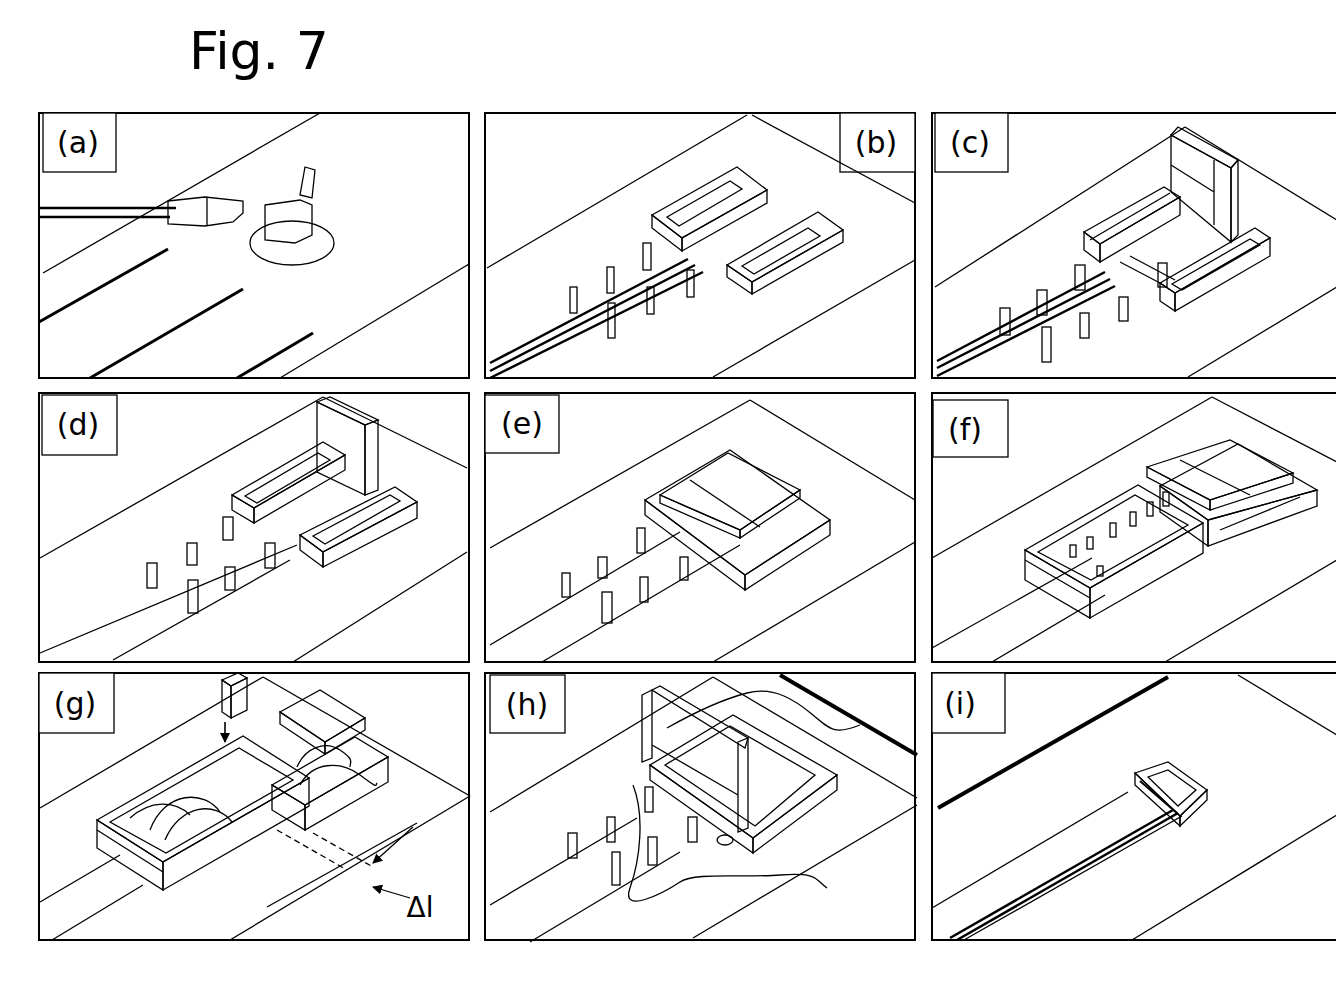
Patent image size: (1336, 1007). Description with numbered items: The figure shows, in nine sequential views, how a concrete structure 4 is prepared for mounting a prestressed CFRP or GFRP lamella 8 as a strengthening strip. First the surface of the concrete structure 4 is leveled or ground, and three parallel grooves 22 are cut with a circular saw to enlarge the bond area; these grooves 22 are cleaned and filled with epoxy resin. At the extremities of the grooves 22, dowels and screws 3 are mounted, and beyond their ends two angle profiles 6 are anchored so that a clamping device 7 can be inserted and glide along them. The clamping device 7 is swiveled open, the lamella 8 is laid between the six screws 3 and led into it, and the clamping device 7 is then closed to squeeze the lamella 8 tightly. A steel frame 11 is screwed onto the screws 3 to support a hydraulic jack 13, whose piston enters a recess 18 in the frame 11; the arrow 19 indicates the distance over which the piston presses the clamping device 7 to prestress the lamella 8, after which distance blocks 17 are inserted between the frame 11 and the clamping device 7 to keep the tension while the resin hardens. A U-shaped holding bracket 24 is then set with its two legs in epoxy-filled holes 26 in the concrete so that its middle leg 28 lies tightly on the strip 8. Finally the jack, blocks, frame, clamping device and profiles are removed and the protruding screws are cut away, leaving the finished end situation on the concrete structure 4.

The dowels and screws 3 is at (573, 286).
The concrete structure 4 is at (379, 213).
The angle profiles 6 is at (702, 212).
The clamping device 7 is at (1230, 190).
The CFRP or GFRP lamella 8 is at (133, 630).
The steel frame 11 is at (1040, 572).
The hydraulic jack 13 is at (203, 798).
The distance blocks 17 is at (233, 712).
The recess 18 is at (1150, 510).
The arrow 19 is at (347, 873).
The grooves 22 is at (540, 372).
The U-shaped holding bracket 24 is at (643, 708).
The holes 26 is at (733, 845).
The middle leg 28 is at (917, 741).